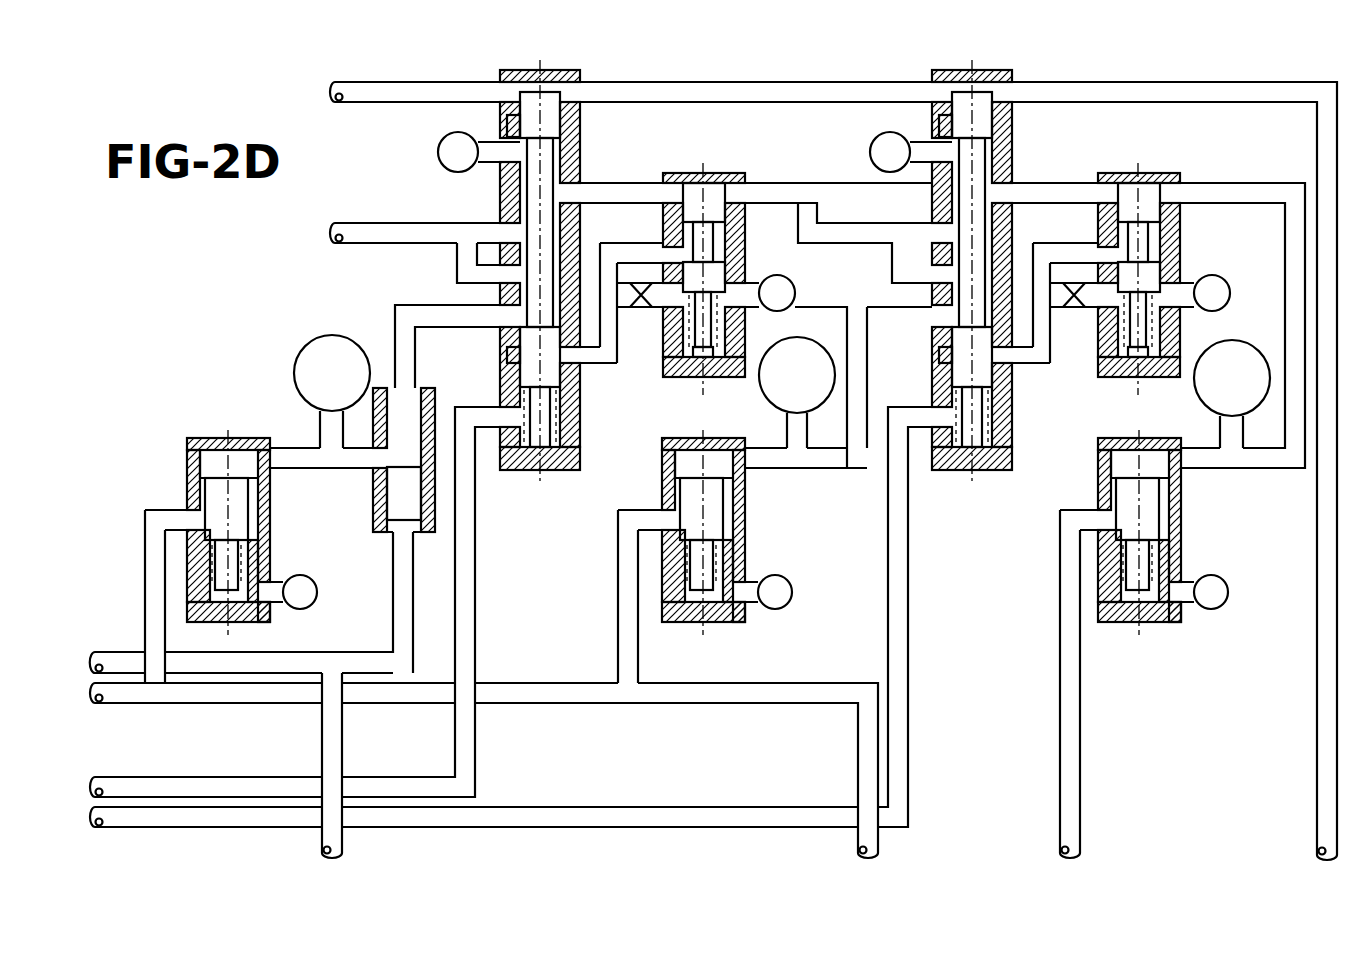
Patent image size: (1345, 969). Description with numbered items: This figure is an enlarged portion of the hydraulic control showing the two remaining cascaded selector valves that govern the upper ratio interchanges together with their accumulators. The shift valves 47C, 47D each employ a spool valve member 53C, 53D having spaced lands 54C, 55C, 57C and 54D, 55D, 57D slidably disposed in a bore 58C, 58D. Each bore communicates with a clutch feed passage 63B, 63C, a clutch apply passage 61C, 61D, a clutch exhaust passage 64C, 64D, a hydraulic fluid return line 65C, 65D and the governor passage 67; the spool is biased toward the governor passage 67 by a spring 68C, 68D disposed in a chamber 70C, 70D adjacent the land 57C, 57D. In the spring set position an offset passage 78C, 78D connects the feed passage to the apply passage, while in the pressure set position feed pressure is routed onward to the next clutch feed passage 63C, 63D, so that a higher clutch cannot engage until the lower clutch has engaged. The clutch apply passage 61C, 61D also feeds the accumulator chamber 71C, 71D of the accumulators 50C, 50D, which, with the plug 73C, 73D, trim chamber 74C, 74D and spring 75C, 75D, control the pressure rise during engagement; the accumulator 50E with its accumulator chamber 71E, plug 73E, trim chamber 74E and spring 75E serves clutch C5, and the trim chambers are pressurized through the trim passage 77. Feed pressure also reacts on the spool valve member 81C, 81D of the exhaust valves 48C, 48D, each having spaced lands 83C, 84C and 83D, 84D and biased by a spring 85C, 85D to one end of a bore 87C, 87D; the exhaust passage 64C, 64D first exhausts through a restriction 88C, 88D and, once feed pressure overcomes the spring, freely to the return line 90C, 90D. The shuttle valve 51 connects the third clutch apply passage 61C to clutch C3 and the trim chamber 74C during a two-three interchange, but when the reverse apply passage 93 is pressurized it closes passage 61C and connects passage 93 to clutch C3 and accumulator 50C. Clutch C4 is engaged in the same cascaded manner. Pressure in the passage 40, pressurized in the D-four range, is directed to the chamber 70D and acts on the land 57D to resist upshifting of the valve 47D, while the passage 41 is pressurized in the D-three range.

The "D4" passage 40 is at (908, 650).
The "D3" passage 41 is at (478, 600).
The shift valve 47C is at (510, 275).
The shift valve 47D is at (944, 275).
The exhaust valve 48C is at (727, 228).
The exhaust valve 48D is at (1162, 211).
The accumulator 50C is at (208, 513).
The accumulator 50D is at (729, 552).
The accumulator 50E is at (1137, 513).
The shuttle valve 51 is at (432, 400).
The spool valve member 53C is at (552, 158).
The spool valve member 53D is at (985, 158).
The land 54C is at (553, 100).
The land 54D is at (985, 100).
The land 55C is at (527, 215).
The land 55D is at (960, 216).
The land 57C is at (555, 372).
The land 57D is at (988, 372).
The bore 58C is at (522, 127).
The bore 58D is at (954, 127).
The third clutch apply passage 61C is at (420, 310).
The clutch apply passage 61D is at (865, 340).
The clutch feed passage 63B is at (330, 233).
The clutch feed passage 63C is at (850, 232).
The clutch feed passage 63D is at (1268, 200).
The clutch exhaust passage 64C is at (628, 247).
The clutch exhaust passage 64D is at (1066, 247).
The hydraulic fluid return line 65C is at (445, 140).
The hydraulic fluid return line 65D is at (880, 140).
The governor passage 67 is at (372, 84).
The spring 68C is at (523, 462).
The spring 68D is at (955, 462).
The chamber 70C is at (563, 426).
The chamber 70D is at (995, 426).
The accumulator chamber 71C is at (235, 455).
The accumulator chamber 71D is at (722, 456).
The accumulator chamber 71E is at (1150, 455).
The plug 73C is at (247, 505).
The plug 73D is at (688, 498).
The plug 73E is at (1124, 500).
The trim chamber 74C is at (198, 486).
The trim chamber 74D is at (735, 508).
The trim chamber 74E is at (1182, 493).
The spring 75C is at (200, 592).
The spring 75D is at (688, 600).
The spring 75E is at (1110, 602).
The trim passage 77 is at (766, 696).
The offset passage 78C is at (462, 272).
The offset passage 78D is at (891, 283).
The spool valve member 81C is at (720, 240).
The spool valve member 81D is at (1155, 240).
The land 83C is at (708, 220).
The land 83D is at (1145, 220).
The land 84C is at (720, 278).
The land 84D is at (1158, 278).
The spring 85C is at (693, 370).
The spring 85D is at (1130, 367).
The bore 87C is at (693, 195).
The bore 87D is at (1128, 195).
The restriction 88C is at (640, 302).
The restriction 88D is at (1073, 302).
The hydraulic fluid return line 90C is at (775, 302).
The hydraulic fluid return line 90D is at (1215, 295).
The reverse apply passage 93 is at (118, 655).
The clutch C3 is at (332, 391).
The clutch C4 is at (797, 392).
The clutch C5 is at (1232, 394).